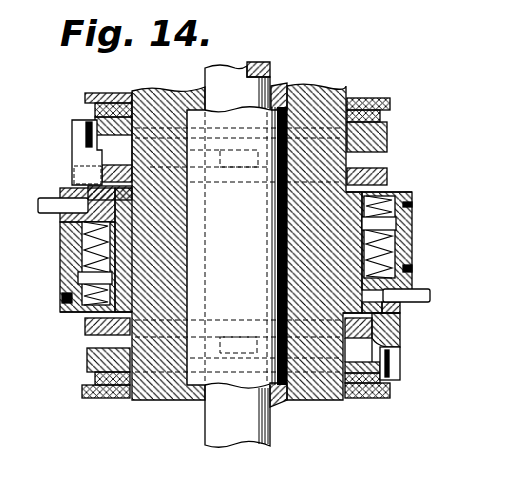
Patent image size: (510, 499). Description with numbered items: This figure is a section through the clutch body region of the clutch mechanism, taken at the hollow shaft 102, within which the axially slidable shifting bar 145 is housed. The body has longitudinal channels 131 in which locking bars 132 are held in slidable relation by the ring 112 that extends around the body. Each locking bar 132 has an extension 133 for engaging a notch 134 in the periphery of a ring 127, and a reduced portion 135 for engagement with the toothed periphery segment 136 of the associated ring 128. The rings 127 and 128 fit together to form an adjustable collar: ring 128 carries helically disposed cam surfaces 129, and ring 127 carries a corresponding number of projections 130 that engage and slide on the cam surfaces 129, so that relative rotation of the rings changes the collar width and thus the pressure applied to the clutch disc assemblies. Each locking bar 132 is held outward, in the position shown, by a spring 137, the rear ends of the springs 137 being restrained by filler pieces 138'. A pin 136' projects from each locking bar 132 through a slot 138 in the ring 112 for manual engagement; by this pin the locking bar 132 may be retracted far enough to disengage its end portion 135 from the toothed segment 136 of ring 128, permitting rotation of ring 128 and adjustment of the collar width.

The hollow shaft 102 is at (277, 84).
The ring 112 is at (62, 264).
The ring 127 is at (388, 177).
The ring 128 is at (388, 137).
The cam surfaces 129 is at (196, 356).
The projections 130 is at (217, 340).
The longitudinal channels 131 is at (117, 228).
The locking bar 132 is at (127, 210).
The extension 133 is at (73, 133).
The notch 134 is at (100, 168).
The reduced portion 135 is at (88, 124).
The toothed periphery segment 136 is at (268, 231).
The pin 136' is at (252, 234).
The spring 137 is at (112, 262).
The slot 138 is at (246, 250).
The filler pieces 138' is at (242, 255).
The bar 145 is at (267, 63).